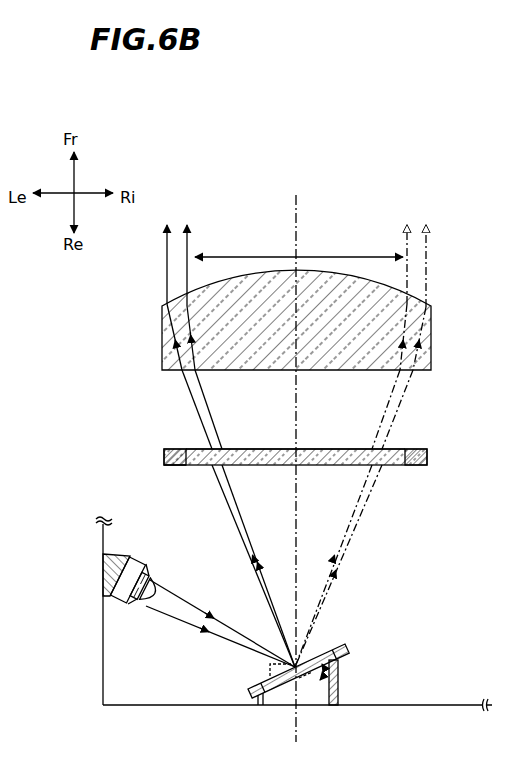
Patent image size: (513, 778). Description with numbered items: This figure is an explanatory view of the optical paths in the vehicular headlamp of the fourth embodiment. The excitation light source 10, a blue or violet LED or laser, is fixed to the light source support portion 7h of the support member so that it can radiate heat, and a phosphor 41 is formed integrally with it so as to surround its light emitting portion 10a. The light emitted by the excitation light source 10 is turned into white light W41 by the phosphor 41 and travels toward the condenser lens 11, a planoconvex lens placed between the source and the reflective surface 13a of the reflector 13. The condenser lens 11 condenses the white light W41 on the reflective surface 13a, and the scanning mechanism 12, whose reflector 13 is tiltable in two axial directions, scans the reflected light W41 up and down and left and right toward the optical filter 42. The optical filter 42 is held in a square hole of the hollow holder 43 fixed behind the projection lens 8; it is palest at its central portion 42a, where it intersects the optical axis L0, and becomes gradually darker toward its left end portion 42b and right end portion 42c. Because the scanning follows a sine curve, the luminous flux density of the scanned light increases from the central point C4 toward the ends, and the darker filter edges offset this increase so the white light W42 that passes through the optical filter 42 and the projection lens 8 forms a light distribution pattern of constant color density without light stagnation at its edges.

The projection lens 8 is at (431, 334).
The optical filter 42 is at (306, 468).
The central portion 42a is at (296, 449).
The left end portion 42b is at (168, 452).
The right end portion 42c is at (426, 452).
The holder 43 is at (172, 468).
The phosphor 41 is at (140, 574).
The condenser lens 11 is at (162, 590).
The excitation light source 10 is at (113, 598).
The light emitting portion 10a is at (122, 605).
The light source support portion 7h is at (104, 572).
The reflector 13 is at (290, 690).
The reflective surface 13a is at (270, 672).
The scanning mechanism 12 is at (303, 686).
The white light W41 is at (231, 500).
The white light W42 is at (191, 396).
The central point C4 is at (300, 257).
The optical axis L0 is at (295, 232).